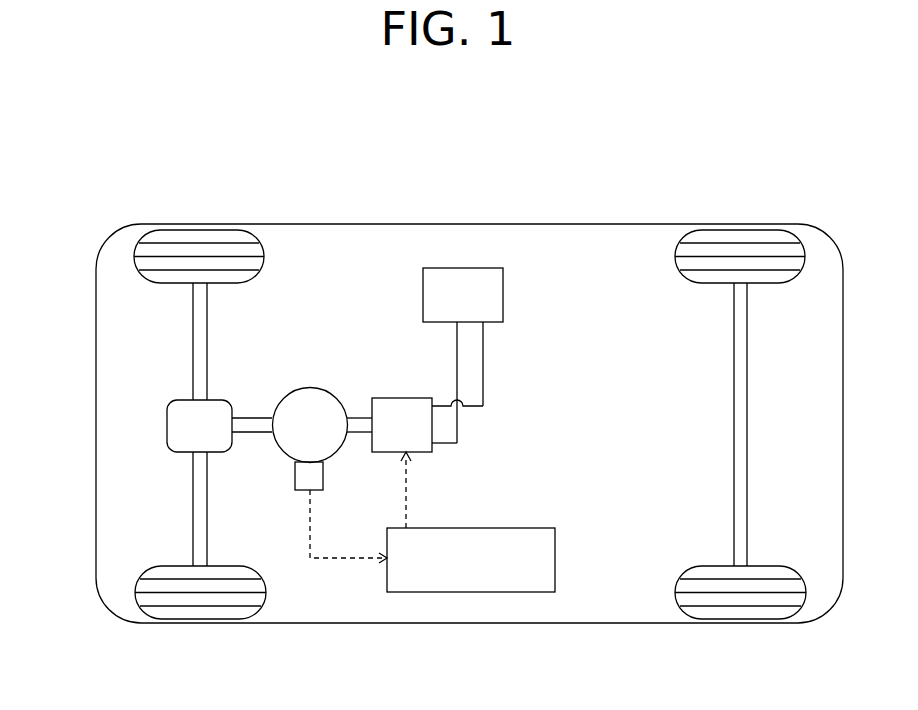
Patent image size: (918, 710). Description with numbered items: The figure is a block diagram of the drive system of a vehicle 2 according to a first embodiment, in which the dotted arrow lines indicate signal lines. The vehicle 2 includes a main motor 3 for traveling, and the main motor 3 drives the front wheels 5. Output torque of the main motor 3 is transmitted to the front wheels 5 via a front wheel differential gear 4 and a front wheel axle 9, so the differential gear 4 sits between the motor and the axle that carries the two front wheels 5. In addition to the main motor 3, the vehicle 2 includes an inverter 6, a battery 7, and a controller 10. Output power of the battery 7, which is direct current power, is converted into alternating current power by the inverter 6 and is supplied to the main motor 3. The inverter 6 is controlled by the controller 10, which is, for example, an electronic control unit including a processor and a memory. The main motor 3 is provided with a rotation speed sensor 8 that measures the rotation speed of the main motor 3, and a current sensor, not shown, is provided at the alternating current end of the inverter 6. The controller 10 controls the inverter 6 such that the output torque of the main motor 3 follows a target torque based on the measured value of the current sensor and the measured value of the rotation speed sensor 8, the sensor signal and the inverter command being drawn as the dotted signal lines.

The vehicle 2 is at (572, 223).
The main motor 3 is at (309, 387).
The front wheel differential gear 4 is at (167, 415).
The front wheels 5 is at (187, 232).
The inverter 6 is at (400, 397).
The battery 7 is at (462, 268).
The rotation speed sensor 8 is at (301, 492).
The front wheel axle 9 is at (193, 337).
The controller 10 is at (440, 592).